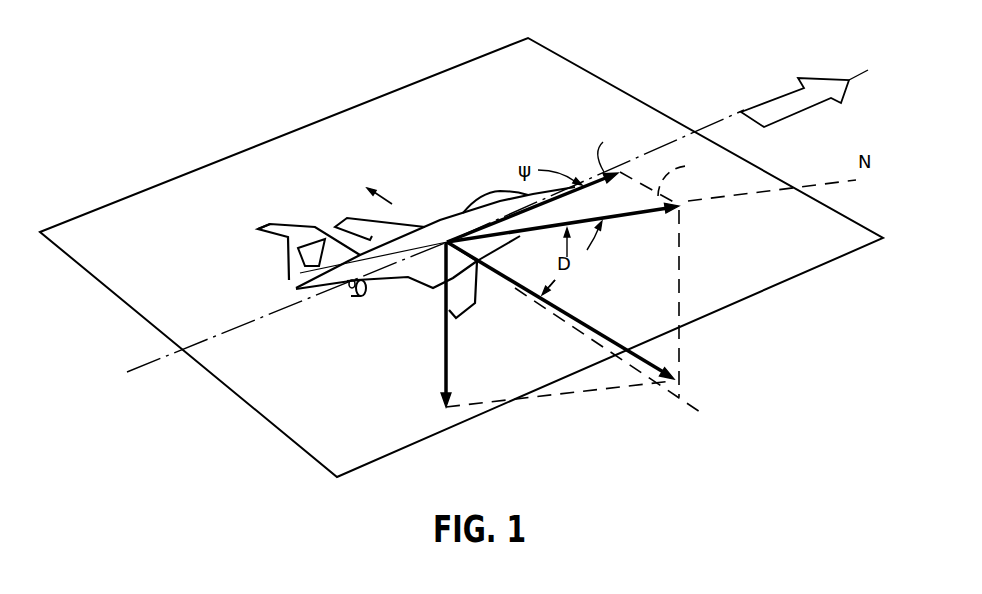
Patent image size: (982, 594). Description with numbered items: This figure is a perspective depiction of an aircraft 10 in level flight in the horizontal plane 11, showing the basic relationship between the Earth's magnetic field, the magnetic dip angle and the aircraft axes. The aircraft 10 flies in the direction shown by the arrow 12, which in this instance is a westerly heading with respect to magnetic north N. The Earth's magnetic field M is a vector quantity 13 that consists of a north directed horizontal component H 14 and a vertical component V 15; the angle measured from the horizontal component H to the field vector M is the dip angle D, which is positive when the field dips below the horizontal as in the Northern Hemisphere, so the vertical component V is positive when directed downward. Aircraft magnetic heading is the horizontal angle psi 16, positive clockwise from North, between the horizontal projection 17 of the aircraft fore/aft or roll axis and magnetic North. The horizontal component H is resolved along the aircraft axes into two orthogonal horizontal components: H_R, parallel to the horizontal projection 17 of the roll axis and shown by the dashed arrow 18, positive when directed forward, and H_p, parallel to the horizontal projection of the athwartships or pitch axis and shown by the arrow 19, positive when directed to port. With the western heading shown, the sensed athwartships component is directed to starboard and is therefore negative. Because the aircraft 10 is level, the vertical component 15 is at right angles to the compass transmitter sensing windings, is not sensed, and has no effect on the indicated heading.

The aircraft 10 is at (398, 297).
The horizontal plane 11 is at (547, 40).
The arrow indicating direction of flight 12 is at (760, 110).
The Earth's magnetic field vector M 13 is at (569, 309).
The north directed horizontal component H 14 is at (645, 217).
The vertical component V 15 is at (443, 356).
The horizontal heading angle psi 16 is at (683, 164).
The horizontal projection of aircraft fore/aft or roll axis 17 is at (329, 288).
The dashed arrow for component H_R 18 is at (593, 176).
The arrow for component H_p 19 is at (398, 212).